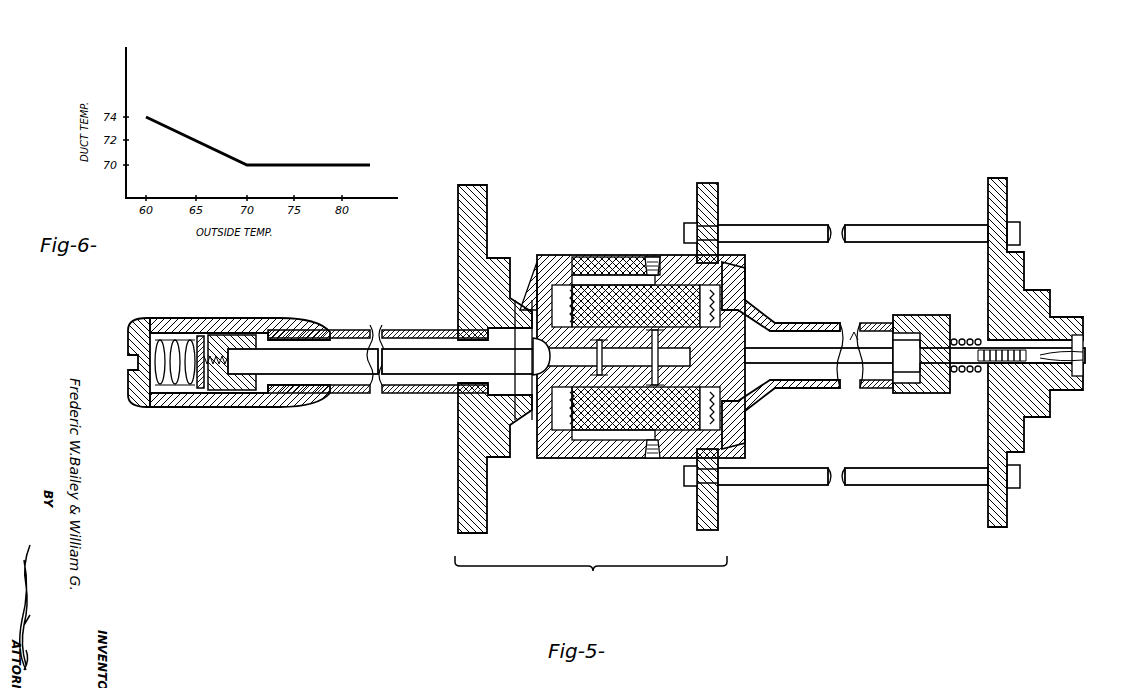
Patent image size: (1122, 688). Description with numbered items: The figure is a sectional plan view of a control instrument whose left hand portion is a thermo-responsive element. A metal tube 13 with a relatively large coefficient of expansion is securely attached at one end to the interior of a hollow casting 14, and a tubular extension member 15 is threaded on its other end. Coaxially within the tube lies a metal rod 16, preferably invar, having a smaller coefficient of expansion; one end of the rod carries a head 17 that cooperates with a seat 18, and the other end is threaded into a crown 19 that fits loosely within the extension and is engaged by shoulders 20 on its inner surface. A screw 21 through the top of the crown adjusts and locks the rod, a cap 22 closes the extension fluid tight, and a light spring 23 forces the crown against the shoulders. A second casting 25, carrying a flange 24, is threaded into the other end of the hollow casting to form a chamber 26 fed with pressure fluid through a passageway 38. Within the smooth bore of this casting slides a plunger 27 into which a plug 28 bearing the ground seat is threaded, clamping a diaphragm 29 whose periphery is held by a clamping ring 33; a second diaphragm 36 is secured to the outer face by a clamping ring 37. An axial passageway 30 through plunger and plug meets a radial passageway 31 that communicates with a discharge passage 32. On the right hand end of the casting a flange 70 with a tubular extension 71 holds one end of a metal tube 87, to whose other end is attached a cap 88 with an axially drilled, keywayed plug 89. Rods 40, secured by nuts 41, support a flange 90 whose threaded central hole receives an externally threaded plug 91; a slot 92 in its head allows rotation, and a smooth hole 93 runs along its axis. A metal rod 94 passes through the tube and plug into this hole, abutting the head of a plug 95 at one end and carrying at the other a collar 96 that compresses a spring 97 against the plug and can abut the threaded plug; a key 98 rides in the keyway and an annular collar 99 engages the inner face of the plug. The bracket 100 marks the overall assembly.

The metal tube 13 is at (382, 398).
The hollow casting 14 is at (552, 458).
The tubular extension member 15 is at (222, 318).
The metal rod 16 is at (374, 340).
The head 17 is at (535, 366).
The seat 18 is at (545, 385).
The crown 19 is at (230, 392).
The shoulders 20 is at (316, 330).
The screw 21 is at (199, 390).
The cap 22 is at (143, 405).
The light spring 23 is at (172, 336).
The flange 24 is at (468, 218).
The second casting 25 is at (630, 262).
The chamber 26 is at (527, 300).
The plunger 27 is at (605, 400).
The plug 28 is at (525, 360).
The diaphragm 29 is at (560, 305).
The axial passageway 30 is at (615, 420).
The radial passageway 31 is at (640, 455).
The discharge passage 32 is at (654, 458).
The clamping ring 33 is at (572, 288).
The diaphragm 36 is at (719, 306).
The clamping ring 37 is at (716, 408).
The passageway 38 is at (653, 258).
The rods 40 is at (846, 224).
The nuts 41 is at (684, 226).
The flange 70 is at (718, 526).
The tubular extension 71 is at (786, 320).
The metal tube 87 is at (860, 392).
The cap 88 is at (938, 315).
The plug 89 is at (958, 378).
The flange 90 is at (1028, 276).
The externally threaded plug 91 is at (1076, 390).
The slot 92 is at (1083, 335).
The smooth hole 93 is at (1072, 353).
The metal rod 94 is at (854, 345).
The plug 95 is at (745, 366).
The collar 96 is at (972, 374).
The spring 97 is at (964, 338).
The key 98 is at (900, 339).
The annular collar 99 is at (899, 371).
The valve assembly 100 is at (591, 579).